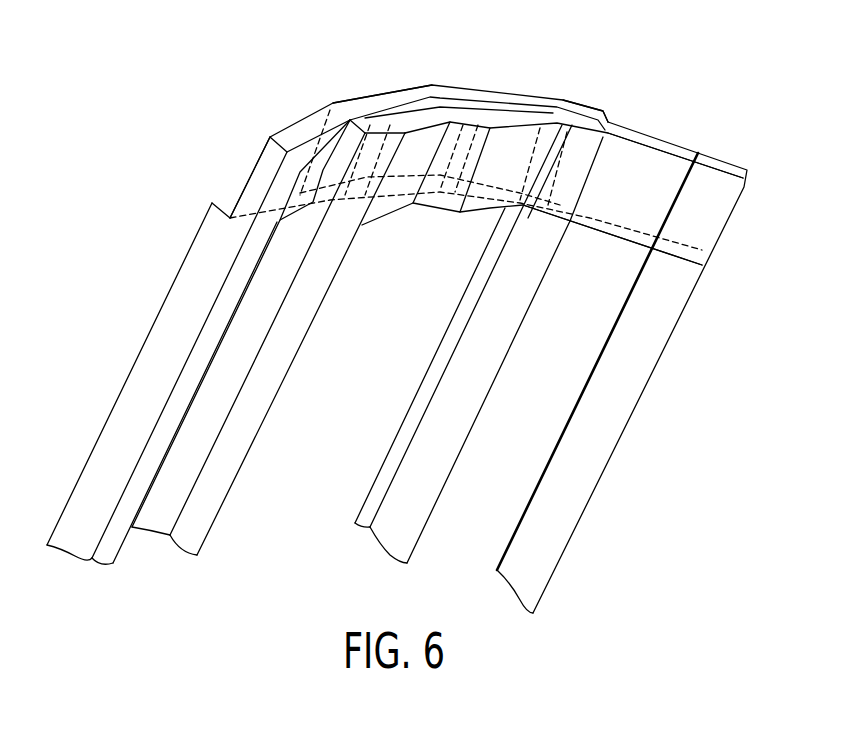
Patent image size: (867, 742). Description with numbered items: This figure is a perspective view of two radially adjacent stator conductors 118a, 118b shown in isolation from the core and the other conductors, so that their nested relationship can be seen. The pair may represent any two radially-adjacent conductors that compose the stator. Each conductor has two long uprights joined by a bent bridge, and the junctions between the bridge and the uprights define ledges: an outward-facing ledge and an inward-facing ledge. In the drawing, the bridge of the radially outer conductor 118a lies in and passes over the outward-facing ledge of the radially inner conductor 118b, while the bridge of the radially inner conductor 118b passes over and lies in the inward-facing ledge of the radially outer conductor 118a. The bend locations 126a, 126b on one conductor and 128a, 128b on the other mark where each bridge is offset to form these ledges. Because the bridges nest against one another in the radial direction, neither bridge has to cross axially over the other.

The radially outer conductor 118a is at (135, 327).
The radially inner conductor 118b is at (648, 321).
The first bend of first rail 126a is at (230, 212).
The second bend of first rail 126b is at (367, 107).
The first bend of second rail 128a is at (583, 107).
The second bend of second rail 128b is at (697, 265).